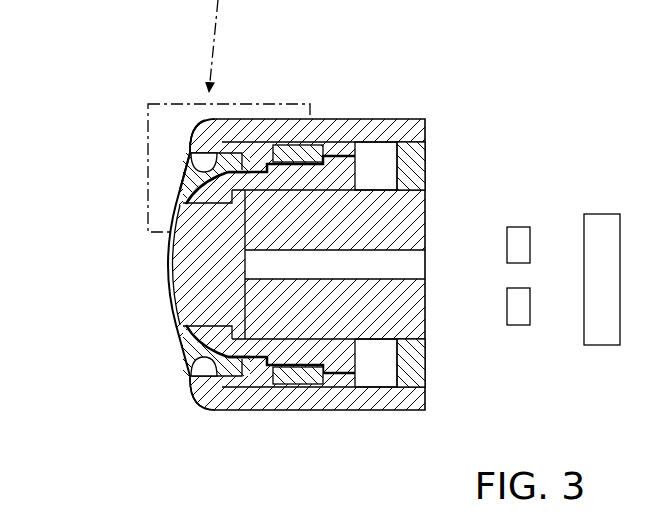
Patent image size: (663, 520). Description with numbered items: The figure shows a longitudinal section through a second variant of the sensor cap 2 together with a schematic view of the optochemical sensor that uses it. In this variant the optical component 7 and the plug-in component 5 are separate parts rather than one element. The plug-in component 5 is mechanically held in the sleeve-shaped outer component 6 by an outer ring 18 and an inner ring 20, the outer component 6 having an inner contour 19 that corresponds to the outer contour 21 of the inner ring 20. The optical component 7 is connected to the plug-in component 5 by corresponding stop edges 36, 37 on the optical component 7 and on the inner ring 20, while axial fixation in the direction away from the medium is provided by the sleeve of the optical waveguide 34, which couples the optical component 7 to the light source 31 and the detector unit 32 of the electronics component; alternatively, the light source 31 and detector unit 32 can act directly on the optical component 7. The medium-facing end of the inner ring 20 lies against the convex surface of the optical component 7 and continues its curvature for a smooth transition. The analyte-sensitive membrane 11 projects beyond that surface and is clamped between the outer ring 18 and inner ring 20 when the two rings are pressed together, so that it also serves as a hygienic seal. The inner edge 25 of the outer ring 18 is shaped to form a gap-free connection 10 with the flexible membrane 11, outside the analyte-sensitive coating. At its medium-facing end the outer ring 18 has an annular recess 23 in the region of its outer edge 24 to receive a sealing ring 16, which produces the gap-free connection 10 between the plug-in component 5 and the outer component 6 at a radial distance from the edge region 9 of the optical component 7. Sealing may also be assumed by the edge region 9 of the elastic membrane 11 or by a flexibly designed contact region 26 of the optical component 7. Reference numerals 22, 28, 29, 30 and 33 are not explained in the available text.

The sensor cap 2 is at (92, 305).
The plug-in component 5 is at (348, 368).
The sleeve-shaped outer component 6 is at (386, 396).
The optical component 7 is at (180, 268).
The edge region 9 is at (170, 197).
The gap-free connection 10 is at (175, 159).
The analyte-sensitive membrane 11 is at (167, 302).
The sealing ring 16 is at (198, 368).
The outer ring 18 is at (305, 158).
The inner contour 19 is at (310, 150).
The inner ring 20 is at (372, 158).
The outer contour 21 is at (350, 170).
The upper cap 22 is at (212, 140).
The annular recess 23 is at (228, 362).
The outer edge 24 is at (185, 150).
The inner edge 25 is at (183, 338).
The contact region 26 is at (195, 396).
The seal lip 28 is at (244, 162).
The upper sealing ring 29 is at (222, 158).
The electronics unit 30 is at (555, 202).
The light source 31 is at (522, 236).
The detector unit 32 is at (521, 316).
The circuit board 33 is at (601, 230).
The optical waveguide 34 is at (400, 226).
The stop edge 36 is at (186, 205).
The stop edge 37 is at (188, 222).